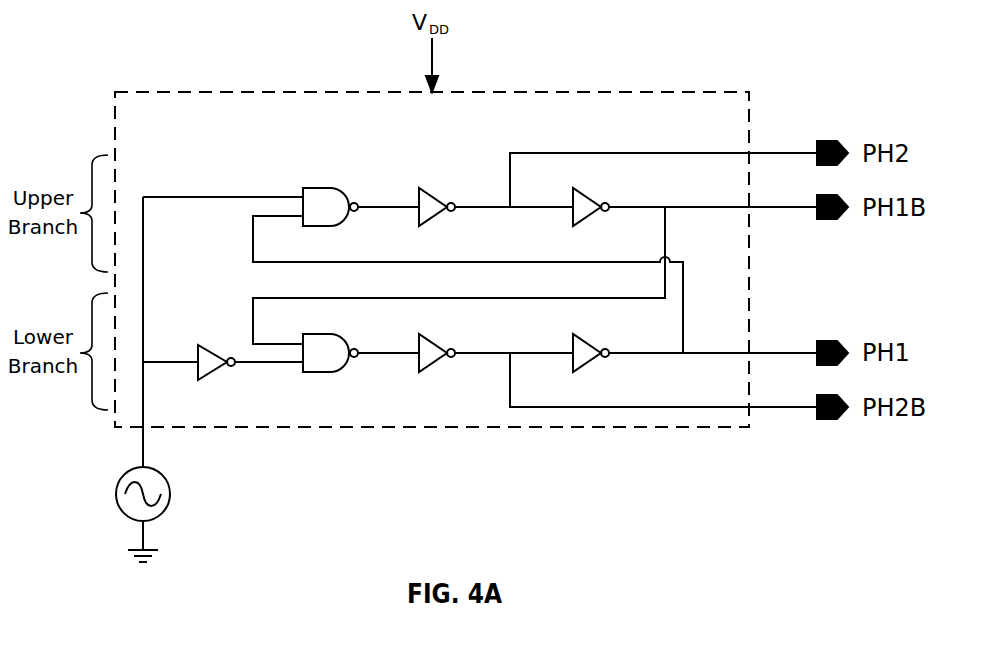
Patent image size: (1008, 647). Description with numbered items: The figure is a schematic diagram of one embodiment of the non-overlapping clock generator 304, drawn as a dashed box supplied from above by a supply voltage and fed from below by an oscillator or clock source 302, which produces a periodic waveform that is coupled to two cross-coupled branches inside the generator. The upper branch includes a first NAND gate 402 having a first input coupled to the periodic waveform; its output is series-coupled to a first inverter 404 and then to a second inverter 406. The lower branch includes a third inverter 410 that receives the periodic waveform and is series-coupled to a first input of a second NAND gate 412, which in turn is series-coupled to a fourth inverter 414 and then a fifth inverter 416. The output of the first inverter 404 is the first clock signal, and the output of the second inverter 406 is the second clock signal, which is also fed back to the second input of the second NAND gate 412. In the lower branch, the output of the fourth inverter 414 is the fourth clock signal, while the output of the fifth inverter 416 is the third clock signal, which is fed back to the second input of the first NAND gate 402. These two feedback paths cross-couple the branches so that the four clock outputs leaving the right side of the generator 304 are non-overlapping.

The clock source 302 is at (172, 496).
The non-overlapping clock generator 304 is at (215, 92).
The first NAND gate 402 is at (320, 186).
The first inverter 404 is at (415, 215).
The second inverter 406 is at (572, 215).
The third inverter 410 is at (210, 343).
The second NAND gate 412 is at (320, 372).
The fourth inverter 414 is at (415, 372).
The fifth inverter 416 is at (586, 371).